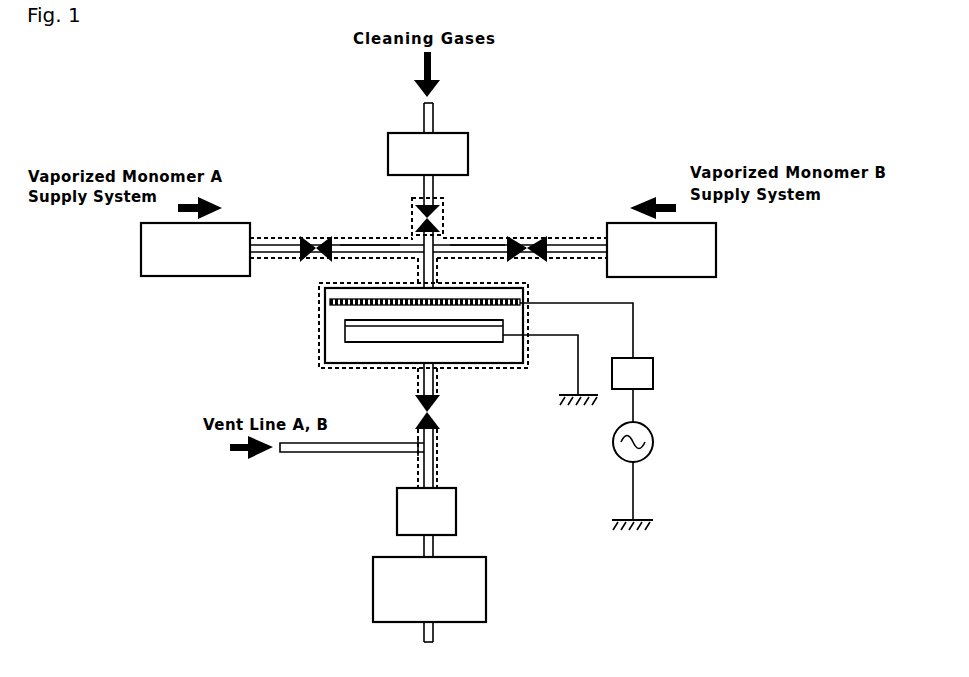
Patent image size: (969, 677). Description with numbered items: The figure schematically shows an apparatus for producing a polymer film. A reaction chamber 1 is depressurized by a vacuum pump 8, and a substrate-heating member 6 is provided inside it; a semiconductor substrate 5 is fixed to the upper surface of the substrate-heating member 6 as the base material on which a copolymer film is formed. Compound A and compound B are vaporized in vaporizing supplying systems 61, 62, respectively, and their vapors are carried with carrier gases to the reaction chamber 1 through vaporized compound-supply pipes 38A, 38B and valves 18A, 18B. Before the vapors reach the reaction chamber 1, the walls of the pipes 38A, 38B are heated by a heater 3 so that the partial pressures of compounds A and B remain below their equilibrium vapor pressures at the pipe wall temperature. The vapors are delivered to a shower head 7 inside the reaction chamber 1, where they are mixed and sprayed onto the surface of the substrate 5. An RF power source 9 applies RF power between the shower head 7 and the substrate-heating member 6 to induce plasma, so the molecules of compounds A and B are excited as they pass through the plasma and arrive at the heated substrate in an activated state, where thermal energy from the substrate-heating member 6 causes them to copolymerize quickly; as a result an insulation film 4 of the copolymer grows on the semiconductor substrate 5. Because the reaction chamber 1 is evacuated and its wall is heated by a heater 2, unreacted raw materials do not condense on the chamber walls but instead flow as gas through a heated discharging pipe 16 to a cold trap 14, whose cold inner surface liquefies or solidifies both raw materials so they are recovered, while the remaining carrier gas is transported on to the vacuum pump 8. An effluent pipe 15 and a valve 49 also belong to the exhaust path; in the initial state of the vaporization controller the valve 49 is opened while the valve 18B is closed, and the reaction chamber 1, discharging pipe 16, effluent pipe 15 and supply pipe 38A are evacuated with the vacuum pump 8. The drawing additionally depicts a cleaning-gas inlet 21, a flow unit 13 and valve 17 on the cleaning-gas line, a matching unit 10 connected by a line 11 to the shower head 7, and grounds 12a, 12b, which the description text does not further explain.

The reaction chamber 1 is at (375, 345).
The heater 2 is at (402, 372).
The heater 3 is at (400, 232).
The insulation film 4 is at (340, 322).
The semiconductor substrate 5 is at (342, 327).
The substrate-heating member 6 is at (353, 337).
The shower head 7 is at (330, 303).
The vacuum pump 8 is at (380, 612).
The RF power source 9 is at (645, 437).
The matching circuit 10 is at (645, 375).
The RF line 11 is at (638, 356).
The ground 12a is at (575, 350).
The ground 12b is at (637, 515).
The cleaning gas mass flow controller 13 is at (453, 155).
The cold trap 14 is at (448, 515).
The effluent pipe 15 is at (338, 450).
The discharging pipe 16 is at (435, 378).
The cleaning gas valve 17 is at (438, 218).
The valve 18A is at (296, 232).
The valve 18B is at (547, 237).
The cleaning gases inlet 21 is at (457, 83).
The vaporized compound-supply pipe 38A is at (355, 247).
The vaporized compound-supply pipe 38B is at (480, 245).
The valve 49 is at (412, 432).
The vaporizing supplying system 61 is at (183, 264).
The vaporizing supplying system 62 is at (710, 255).